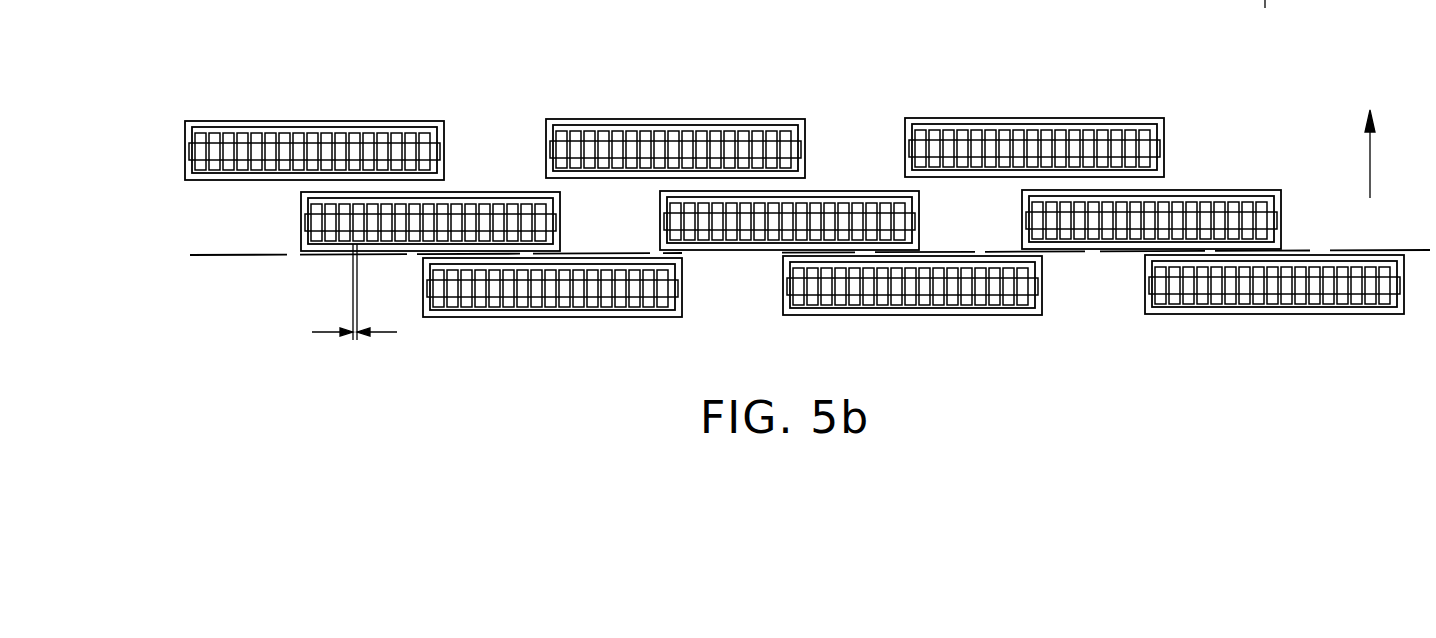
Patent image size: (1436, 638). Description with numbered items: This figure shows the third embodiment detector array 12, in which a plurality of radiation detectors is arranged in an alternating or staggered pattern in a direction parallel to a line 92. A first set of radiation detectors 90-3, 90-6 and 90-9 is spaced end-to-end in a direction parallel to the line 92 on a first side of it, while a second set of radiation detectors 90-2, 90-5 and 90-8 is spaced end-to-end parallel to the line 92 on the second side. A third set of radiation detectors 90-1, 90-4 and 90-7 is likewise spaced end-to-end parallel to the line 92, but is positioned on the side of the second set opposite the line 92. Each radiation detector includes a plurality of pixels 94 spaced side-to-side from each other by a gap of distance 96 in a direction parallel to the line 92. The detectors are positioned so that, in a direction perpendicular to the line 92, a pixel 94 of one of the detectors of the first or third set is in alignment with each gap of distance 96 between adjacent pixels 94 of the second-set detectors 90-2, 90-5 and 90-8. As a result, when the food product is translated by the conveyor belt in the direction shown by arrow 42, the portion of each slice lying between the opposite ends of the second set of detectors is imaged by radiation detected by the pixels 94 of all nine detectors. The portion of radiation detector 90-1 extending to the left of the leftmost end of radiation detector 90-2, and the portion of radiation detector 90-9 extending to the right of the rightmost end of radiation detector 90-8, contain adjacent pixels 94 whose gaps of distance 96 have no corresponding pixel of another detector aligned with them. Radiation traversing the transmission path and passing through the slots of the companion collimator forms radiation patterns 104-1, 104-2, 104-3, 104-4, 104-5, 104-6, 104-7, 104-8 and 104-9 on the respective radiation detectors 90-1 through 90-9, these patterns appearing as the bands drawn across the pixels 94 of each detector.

The third embodiment detector array 12 is at (230, 343).
The arrow 42 is at (1370, 183).
The line 92 is at (1362, 250).
The pixels 94 is at (313, 131).
The gap of distance 96 is at (383, 333).
The radiation detector 90-1 is at (343, 116).
The radiation detector 90-2 is at (364, 252).
The radiation detector 90-3 is at (590, 309).
The radiation detector 90-4 is at (704, 98).
The radiation detector 90-5 is at (755, 196).
The radiation detector 90-6 is at (942, 312).
The radiation detector 90-7 is at (1056, 111).
The radiation detector 90-8 is at (1184, 162).
The radiation detector 90-9 is at (1282, 311).
The radiation pattern 104-1 is at (443, 145).
The radiation pattern 104-2 is at (305, 222).
The radiation pattern 104-3 is at (683, 287).
The radiation pattern 104-4 is at (803, 140).
The radiation pattern 104-5 is at (913, 220).
The radiation pattern 104-6 is at (1041, 285).
The radiation pattern 104-7 is at (1160, 142).
The radiation pattern 104-8 is at (1276, 215).
The radiation pattern 104-9 is at (1402, 287).